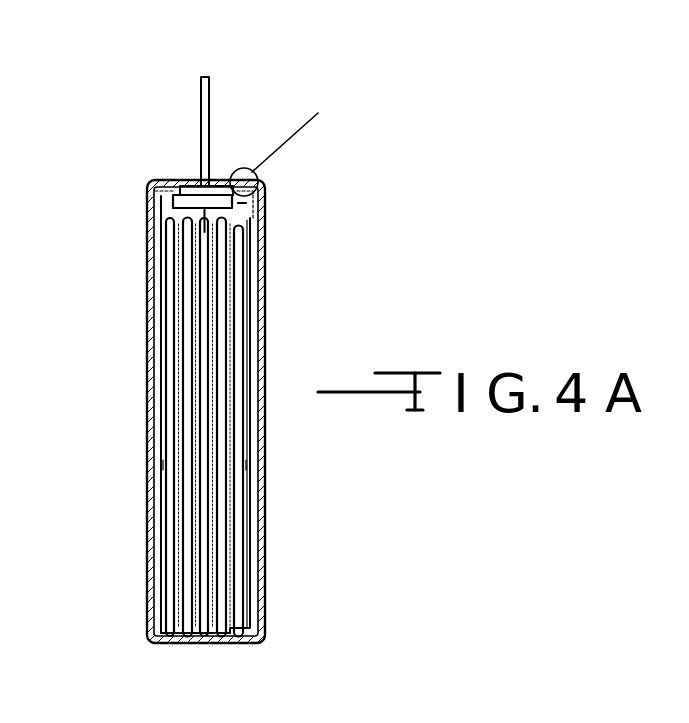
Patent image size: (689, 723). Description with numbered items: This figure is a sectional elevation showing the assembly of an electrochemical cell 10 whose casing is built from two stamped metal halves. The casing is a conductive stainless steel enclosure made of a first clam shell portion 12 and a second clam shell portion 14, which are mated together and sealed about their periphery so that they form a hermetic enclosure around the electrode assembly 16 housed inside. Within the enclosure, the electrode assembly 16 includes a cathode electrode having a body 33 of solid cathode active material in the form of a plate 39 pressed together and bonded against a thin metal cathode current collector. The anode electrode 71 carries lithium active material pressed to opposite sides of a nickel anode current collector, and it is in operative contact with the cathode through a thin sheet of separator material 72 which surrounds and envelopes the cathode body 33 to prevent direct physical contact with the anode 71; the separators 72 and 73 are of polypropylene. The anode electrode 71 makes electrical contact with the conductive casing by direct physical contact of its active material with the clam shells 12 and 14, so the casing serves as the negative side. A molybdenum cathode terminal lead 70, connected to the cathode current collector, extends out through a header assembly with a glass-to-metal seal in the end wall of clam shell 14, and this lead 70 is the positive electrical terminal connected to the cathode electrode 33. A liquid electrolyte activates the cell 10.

The electrochemical cell 10 is at (128, 175).
The first clam shell portion 12 is at (265, 276).
The second clam shell portion 14 is at (148, 238).
The electrode assembly 16 is at (262, 211).
The cathode body 33 is at (193, 639).
The cathode plate 39 is at (173, 198).
The cathode terminal lead 70 is at (209, 76).
The anode electrode 71 is at (203, 634).
The separator material 72 is at (250, 307).
The separator 73 is at (166, 463).